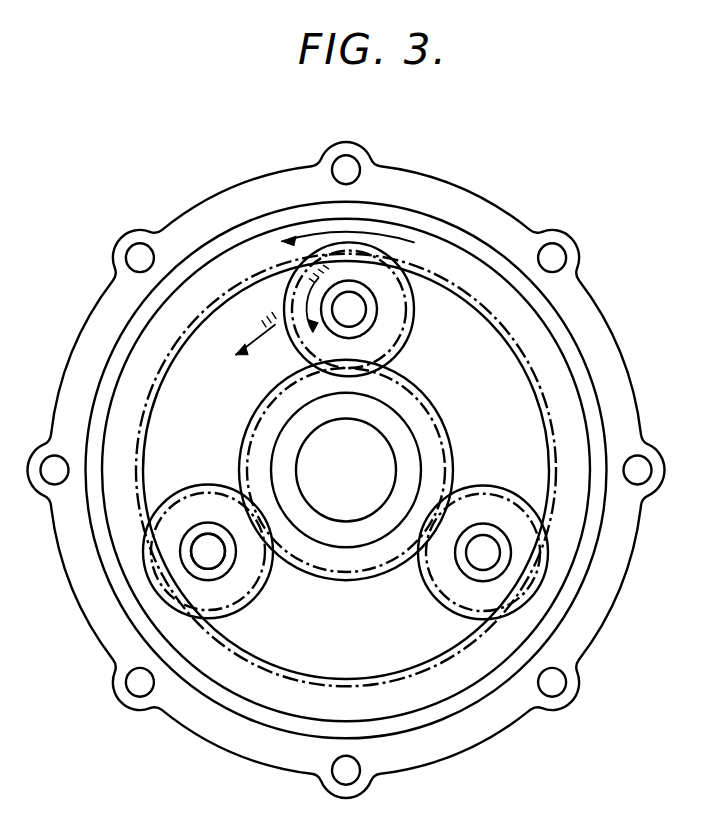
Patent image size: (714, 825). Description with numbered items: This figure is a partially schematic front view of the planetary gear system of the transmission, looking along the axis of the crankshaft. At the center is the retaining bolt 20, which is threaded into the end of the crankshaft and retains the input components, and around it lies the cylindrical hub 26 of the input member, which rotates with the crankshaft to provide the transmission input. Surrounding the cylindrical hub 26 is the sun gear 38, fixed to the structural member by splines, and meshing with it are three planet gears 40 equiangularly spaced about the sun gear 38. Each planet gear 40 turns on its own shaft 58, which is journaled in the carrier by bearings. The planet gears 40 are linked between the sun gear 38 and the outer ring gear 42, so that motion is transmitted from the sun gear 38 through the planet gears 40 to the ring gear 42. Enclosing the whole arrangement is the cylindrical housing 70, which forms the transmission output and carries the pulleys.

The retaining bolt 20 is at (396, 463).
The cylindrical hub 26 is at (352, 537).
The sun gear 38 is at (420, 403).
The planet gears 40 is at (327, 273).
The ring gear 42 is at (504, 287).
The shaft 58 is at (197, 552).
The cylindrical housing 70 is at (455, 193).